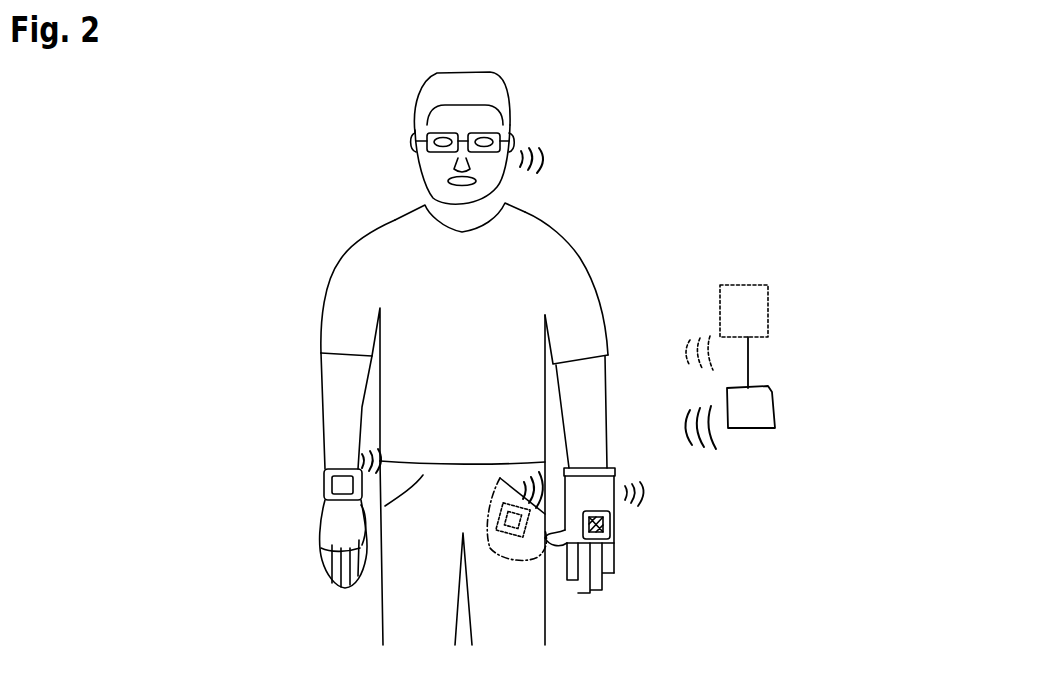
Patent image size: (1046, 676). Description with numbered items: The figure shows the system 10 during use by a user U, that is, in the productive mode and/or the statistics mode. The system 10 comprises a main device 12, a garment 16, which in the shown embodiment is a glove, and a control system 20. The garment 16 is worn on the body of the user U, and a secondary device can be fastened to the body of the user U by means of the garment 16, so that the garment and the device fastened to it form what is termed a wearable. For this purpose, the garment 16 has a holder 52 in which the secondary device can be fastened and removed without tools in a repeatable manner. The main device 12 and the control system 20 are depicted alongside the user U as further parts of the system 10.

The system 10 is at (742, 118).
The main device 12 is at (493, 133).
The garment 16 is at (603, 504).
The control system 20 is at (772, 407).
The holder 52 is at (606, 536).
The user U is at (365, 225).